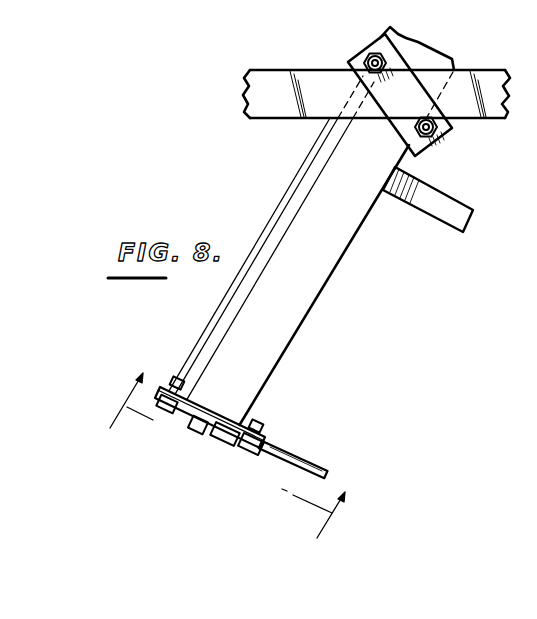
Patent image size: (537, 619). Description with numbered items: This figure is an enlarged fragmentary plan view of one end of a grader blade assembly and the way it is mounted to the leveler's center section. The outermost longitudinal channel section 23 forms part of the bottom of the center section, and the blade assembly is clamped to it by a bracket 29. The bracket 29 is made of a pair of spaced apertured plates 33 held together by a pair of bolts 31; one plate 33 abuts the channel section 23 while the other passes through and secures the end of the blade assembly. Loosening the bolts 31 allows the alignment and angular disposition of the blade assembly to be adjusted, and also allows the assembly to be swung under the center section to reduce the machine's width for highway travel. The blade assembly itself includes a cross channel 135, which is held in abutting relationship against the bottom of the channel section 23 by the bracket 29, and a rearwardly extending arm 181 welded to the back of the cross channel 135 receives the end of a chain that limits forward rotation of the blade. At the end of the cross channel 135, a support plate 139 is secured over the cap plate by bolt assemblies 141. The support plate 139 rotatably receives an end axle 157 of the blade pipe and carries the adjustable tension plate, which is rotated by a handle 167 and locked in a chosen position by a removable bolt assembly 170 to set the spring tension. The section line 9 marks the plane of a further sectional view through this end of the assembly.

The channel section 23 is at (278, 82).
The bracket 29 is at (354, 44).
The bolt 31 is at (374, 53).
The apertured plate 33 is at (390, 104).
The cross channel 135 is at (326, 178).
The rearwardly extending arm 181 is at (456, 210).
The removable bolt assembly 170 is at (226, 418).
The handle 167 is at (300, 455).
The bolt assembly 141 is at (163, 413).
The end axle 157 is at (195, 433).
The support plate 139 is at (229, 446).
The section line 9- 9 is at (244, 439).